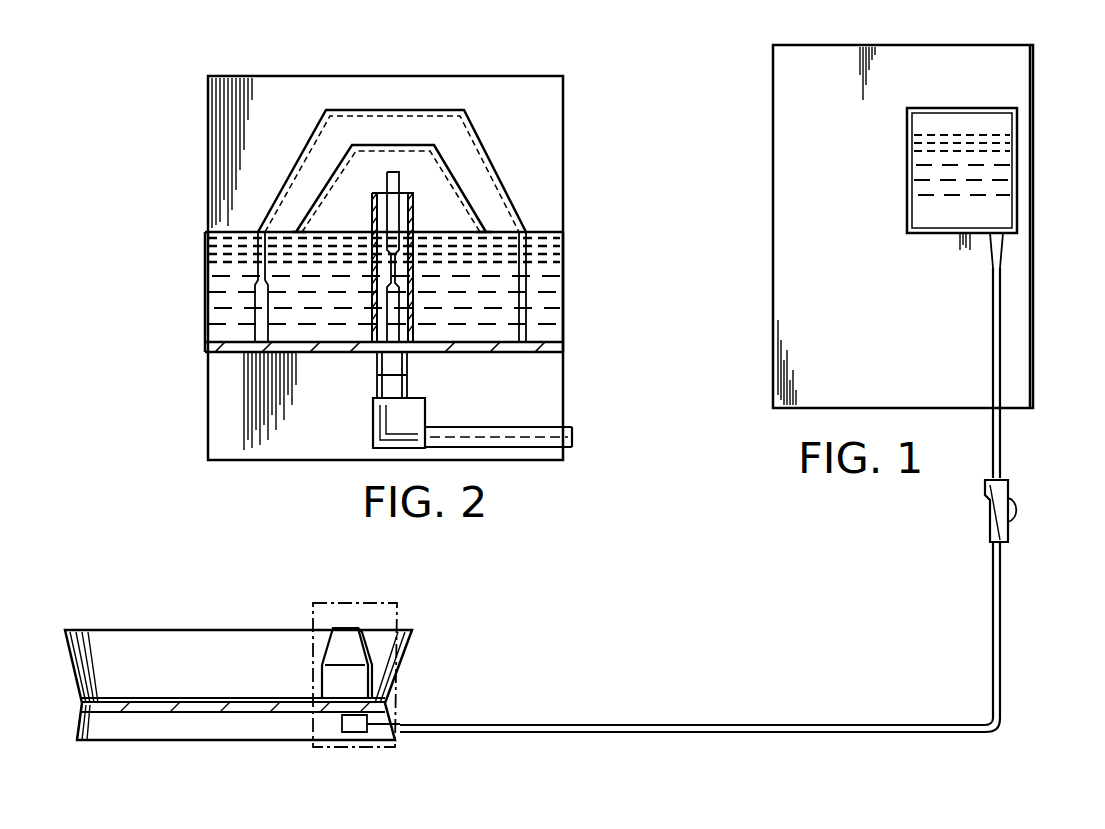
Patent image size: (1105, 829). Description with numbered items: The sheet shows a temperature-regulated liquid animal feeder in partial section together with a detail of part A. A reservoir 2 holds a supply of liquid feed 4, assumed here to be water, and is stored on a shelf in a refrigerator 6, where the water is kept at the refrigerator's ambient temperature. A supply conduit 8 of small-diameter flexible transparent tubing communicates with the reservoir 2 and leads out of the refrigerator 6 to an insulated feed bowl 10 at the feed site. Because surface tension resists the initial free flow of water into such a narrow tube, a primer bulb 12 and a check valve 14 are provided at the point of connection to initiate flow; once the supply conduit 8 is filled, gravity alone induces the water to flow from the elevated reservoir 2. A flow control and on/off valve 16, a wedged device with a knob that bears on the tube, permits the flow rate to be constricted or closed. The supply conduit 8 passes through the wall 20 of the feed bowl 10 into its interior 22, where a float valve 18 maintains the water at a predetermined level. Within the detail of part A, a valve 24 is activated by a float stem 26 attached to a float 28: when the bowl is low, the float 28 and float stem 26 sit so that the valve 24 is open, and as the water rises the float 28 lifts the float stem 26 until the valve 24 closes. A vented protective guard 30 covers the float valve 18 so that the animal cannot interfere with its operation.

In FIG. 1, the reservoir 2 is at (1015, 136).
In FIG. 2, the liquid feed 4 is at (215, 306).
In FIG. 1, the liquid feed 4 is at (987, 188).
In FIG. 1, the refrigerator 6 is at (1035, 82).
In FIG. 2, the supply conduit 8 is at (563, 427).
In FIG. 1, the supply conduit 8 is at (820, 733).
In FIG. 1, the feed bowl 10 is at (80, 677).
In FIG. 1, the primer bulb 12 is at (1003, 252).
In FIG. 1, the check valve 14 is at (1020, 224).
In FIG. 1, the flow control and on/off valve 16 is at (985, 500).
In FIG. 2, the float valve 18 is at (433, 197).
In FIG. 2, the wall 20 is at (245, 362).
In FIG. 1, the wall 20 is at (263, 713).
In FIG. 1, the interior 22 is at (150, 655).
In FIG. 2, the valve 24 is at (413, 330).
In FIG. 2, the float stem 26 is at (392, 226).
In FIG. 2, the float 28 is at (450, 187).
In FIG. 2, the vented protective guard 30 is at (275, 196).
In FIG. 1, the part A is at (395, 600).